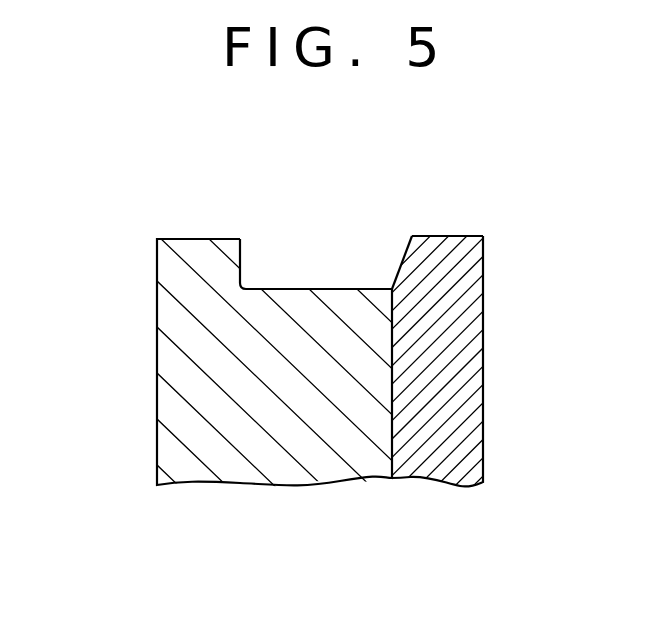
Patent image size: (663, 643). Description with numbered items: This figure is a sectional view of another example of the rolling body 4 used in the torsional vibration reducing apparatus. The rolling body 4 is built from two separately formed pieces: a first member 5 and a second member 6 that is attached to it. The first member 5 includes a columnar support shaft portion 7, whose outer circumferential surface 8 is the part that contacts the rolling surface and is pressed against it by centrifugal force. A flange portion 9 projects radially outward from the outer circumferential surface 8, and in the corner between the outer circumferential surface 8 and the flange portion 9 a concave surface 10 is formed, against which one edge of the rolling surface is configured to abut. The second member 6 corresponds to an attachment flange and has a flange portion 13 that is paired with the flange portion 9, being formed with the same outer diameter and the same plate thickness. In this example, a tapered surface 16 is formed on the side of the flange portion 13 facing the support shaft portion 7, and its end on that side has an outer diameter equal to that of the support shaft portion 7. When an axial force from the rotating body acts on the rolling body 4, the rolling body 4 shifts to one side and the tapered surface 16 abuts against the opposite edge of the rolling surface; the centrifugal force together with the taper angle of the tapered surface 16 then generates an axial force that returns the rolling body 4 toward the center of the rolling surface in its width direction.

The rolling body 4 is at (495, 219).
The first member 5 is at (68, 272).
The second member 6 is at (458, 375).
The support shaft portion 7 is at (283, 378).
The outer circumferential surface 8 is at (315, 288).
The flange portion 9 is at (175, 271).
The concave surface 10 is at (245, 288).
The flange portion 13 is at (450, 255).
The tapered surface 16 is at (398, 267).